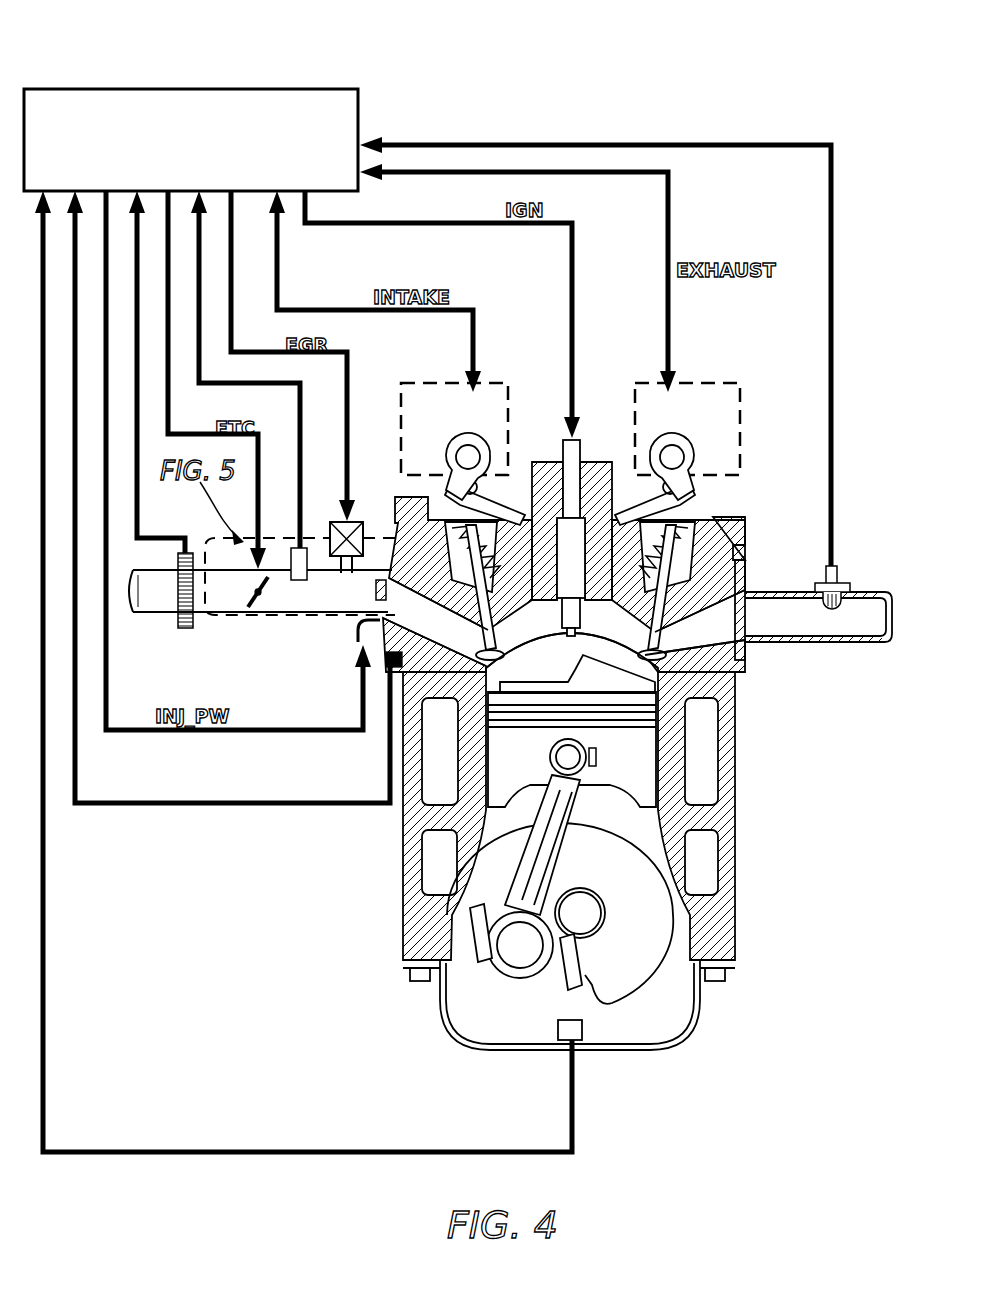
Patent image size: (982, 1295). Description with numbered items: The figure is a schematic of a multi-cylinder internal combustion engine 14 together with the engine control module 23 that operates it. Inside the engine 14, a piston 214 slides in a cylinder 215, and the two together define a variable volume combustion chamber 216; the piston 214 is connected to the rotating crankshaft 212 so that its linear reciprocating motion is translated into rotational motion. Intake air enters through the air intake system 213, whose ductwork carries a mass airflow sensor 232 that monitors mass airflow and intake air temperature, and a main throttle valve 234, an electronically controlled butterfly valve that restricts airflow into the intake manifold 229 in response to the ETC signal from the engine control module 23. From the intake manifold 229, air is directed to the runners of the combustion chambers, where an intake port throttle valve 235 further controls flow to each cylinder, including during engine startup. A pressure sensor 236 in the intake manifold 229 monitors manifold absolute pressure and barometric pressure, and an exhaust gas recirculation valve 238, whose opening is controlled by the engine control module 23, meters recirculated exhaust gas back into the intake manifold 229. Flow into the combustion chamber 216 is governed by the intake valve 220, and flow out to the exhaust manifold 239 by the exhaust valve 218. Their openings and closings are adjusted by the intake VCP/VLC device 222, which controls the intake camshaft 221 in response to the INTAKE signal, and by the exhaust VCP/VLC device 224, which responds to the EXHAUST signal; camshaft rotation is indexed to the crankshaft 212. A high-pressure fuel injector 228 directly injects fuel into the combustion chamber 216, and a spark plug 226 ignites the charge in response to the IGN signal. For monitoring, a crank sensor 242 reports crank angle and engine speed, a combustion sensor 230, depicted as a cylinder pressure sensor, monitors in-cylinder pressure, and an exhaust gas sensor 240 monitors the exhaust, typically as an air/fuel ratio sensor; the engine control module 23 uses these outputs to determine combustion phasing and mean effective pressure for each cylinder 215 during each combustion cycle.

The engine 14 is at (740, 815).
The engine control module 23 is at (318, 86).
The crankshaft 212 is at (640, 985).
The air intake system 213 is at (205, 536).
The piston 214 is at (640, 772).
The cylinder 215 is at (662, 688).
The combustion chamber 216 is at (550, 676).
The exhaust valve 218 is at (655, 634).
The intake valve 220 is at (478, 612).
The intake camshaft 221 is at (472, 452).
The intake VCP/VLC device 222 is at (490, 392).
The exhaust VCP/VLC device 224 is at (730, 450).
The spark plug 226 is at (578, 446).
The fuel injector 228 is at (358, 706).
The intake manifold 229 is at (378, 578).
The combustion sensor 230 is at (388, 740).
The mass airflow sensor 232 is at (185, 630).
The main throttle valve 234 is at (250, 605).
The intake port throttle valve 235 is at (355, 603).
The pressure sensor 236 is at (298, 582).
The exhaust gas recirculation valve 238 is at (337, 560).
The exhaust manifold 239 is at (760, 592).
The exhaust gas sensor 240 is at (838, 570).
The crank sensor 242 is at (565, 1033).